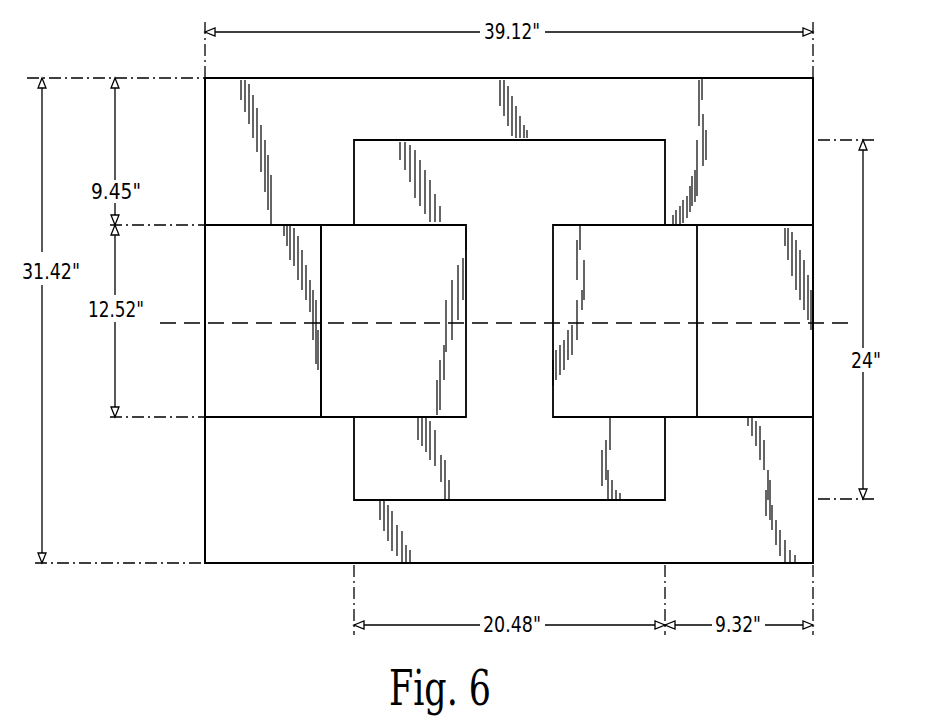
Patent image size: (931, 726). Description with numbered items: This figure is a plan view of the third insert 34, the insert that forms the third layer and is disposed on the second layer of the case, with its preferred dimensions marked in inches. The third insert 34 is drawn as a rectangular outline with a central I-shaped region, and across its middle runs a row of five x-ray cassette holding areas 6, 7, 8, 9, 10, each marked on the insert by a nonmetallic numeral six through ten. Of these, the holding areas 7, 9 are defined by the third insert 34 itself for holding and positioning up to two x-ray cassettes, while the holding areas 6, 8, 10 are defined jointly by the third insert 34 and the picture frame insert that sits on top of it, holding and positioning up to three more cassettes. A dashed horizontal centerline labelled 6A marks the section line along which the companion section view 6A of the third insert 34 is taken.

The third insert 34 is at (187, 47).
The section view of the third insert 6A is at (173, 322).
The x-ray cassette holding area 6 is at (286, 364).
The x-ray cassette holding area 7 is at (393, 321).
The x-ray cassette holding area 8 is at (509, 320).
The x-ray cassette holding area 9 is at (643, 364).
The x-ray cassette holding area 10 is at (755, 321).